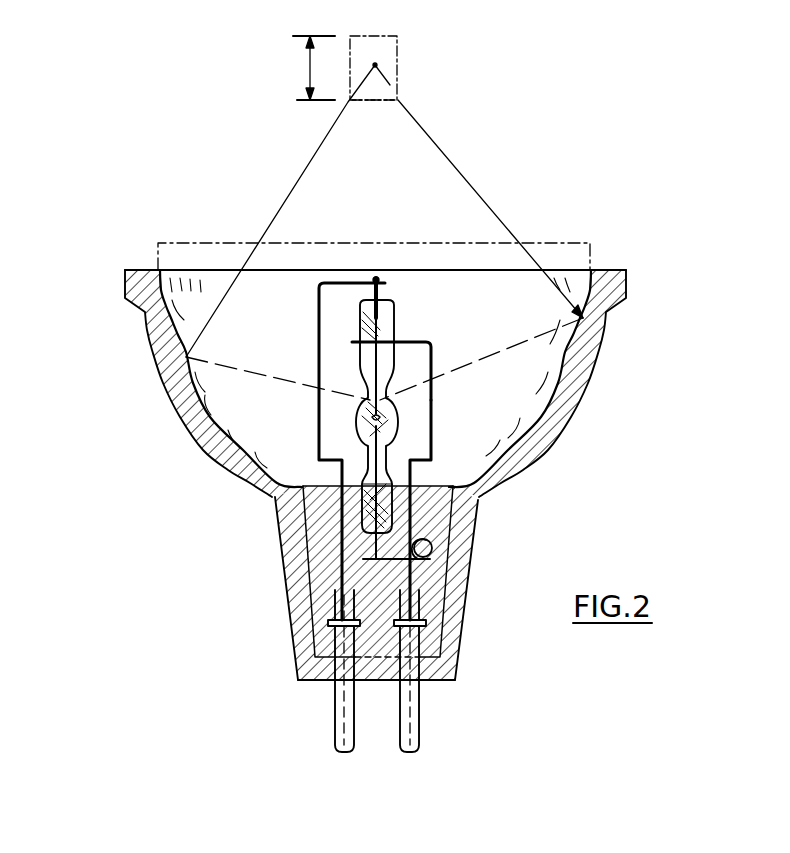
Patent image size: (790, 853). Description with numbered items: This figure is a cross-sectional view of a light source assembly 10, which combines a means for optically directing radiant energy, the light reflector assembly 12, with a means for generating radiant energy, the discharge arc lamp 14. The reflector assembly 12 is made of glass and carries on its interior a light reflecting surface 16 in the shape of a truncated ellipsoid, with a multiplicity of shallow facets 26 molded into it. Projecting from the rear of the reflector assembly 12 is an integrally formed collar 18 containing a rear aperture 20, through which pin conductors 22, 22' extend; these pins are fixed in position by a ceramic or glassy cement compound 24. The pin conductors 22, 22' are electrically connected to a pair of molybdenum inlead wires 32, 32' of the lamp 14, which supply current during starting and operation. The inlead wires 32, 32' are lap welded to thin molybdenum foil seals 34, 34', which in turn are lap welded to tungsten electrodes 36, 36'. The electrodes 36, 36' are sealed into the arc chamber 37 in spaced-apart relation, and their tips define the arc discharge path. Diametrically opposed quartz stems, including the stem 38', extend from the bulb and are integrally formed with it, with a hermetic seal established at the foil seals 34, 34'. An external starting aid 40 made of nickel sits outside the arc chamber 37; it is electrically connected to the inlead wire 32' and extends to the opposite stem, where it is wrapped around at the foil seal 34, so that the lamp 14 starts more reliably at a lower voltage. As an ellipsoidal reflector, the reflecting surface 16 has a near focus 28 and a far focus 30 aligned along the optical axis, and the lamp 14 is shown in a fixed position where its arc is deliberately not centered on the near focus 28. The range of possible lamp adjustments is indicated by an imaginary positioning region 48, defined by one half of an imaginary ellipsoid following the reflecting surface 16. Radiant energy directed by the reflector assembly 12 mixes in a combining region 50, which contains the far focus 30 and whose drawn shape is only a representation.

The light source assembly 10 is at (543, 517).
The light reflector assembly 12 is at (605, 317).
The discharge arc lamp 14 is at (400, 300).
The light reflecting surface 16 is at (375, 282).
The collar 18 is at (295, 620).
The rear aperture 20 is at (382, 681).
The pin conductor 22 is at (309, 671).
The pin conductor 22' is at (443, 671).
The cement compound 24 is at (322, 566).
The facets 26 is at (222, 422).
The near focus 28 is at (372, 403).
The far focus 30 is at (380, 65).
The inlead wire 32 is at (399, 275).
The inlead wire 32' is at (327, 517).
The foil seal 34 is at (328, 449).
The foil seal 34' is at (445, 510).
The electrode 36 is at (398, 379).
The electrode 36' is at (436, 436).
The arc chamber 37 is at (360, 428).
The quartz stem 38' is at (332, 459).
The external starting aid 40 is at (413, 341).
The positioning region 48 is at (190, 243).
The combining region 50 is at (365, 101).